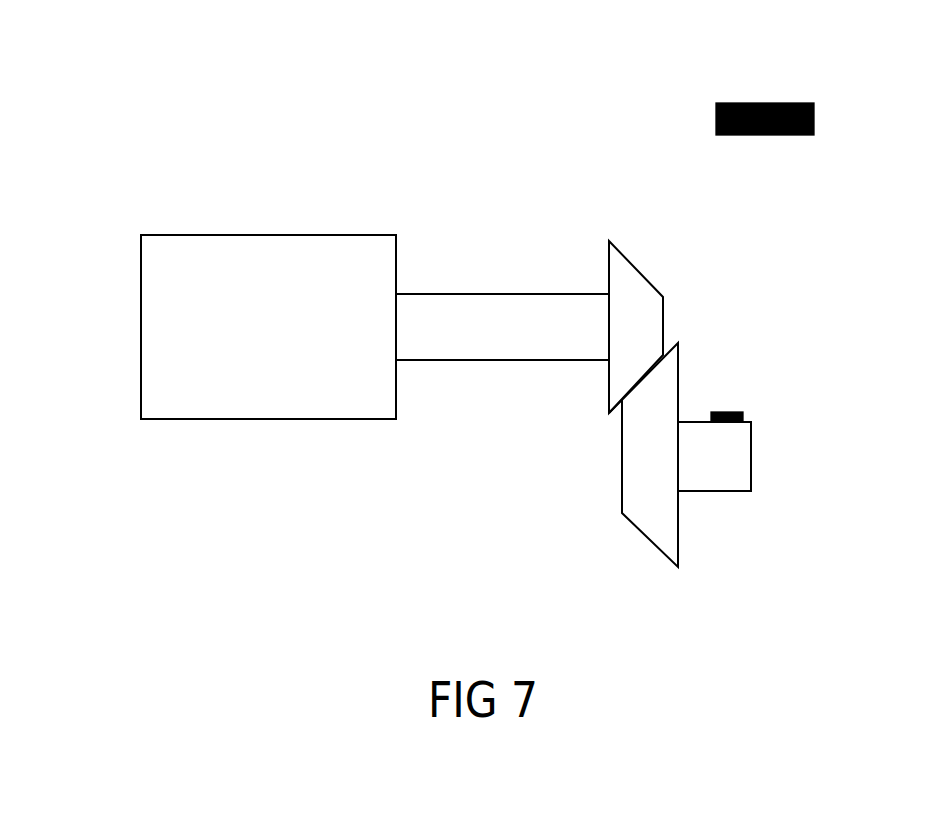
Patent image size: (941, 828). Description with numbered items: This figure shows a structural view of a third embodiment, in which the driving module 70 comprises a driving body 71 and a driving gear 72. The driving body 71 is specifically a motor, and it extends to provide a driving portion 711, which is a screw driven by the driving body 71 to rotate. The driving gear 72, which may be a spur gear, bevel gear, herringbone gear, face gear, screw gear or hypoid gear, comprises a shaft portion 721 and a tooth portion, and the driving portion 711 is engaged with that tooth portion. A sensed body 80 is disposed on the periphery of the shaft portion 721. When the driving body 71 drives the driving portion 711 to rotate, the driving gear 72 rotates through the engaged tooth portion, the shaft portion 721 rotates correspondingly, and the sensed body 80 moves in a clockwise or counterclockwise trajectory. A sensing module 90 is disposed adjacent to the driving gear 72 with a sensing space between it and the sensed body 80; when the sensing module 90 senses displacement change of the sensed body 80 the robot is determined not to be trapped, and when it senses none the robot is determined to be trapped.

The driving module 70 is at (476, 387).
The driving body 71 is at (375, 349).
The driving portion 711 is at (500, 312).
The driving gear 72 is at (649, 432).
The shaft portion 721 is at (719, 467).
The sensed body 80 is at (727, 412).
The sensing module 90 is at (787, 103).